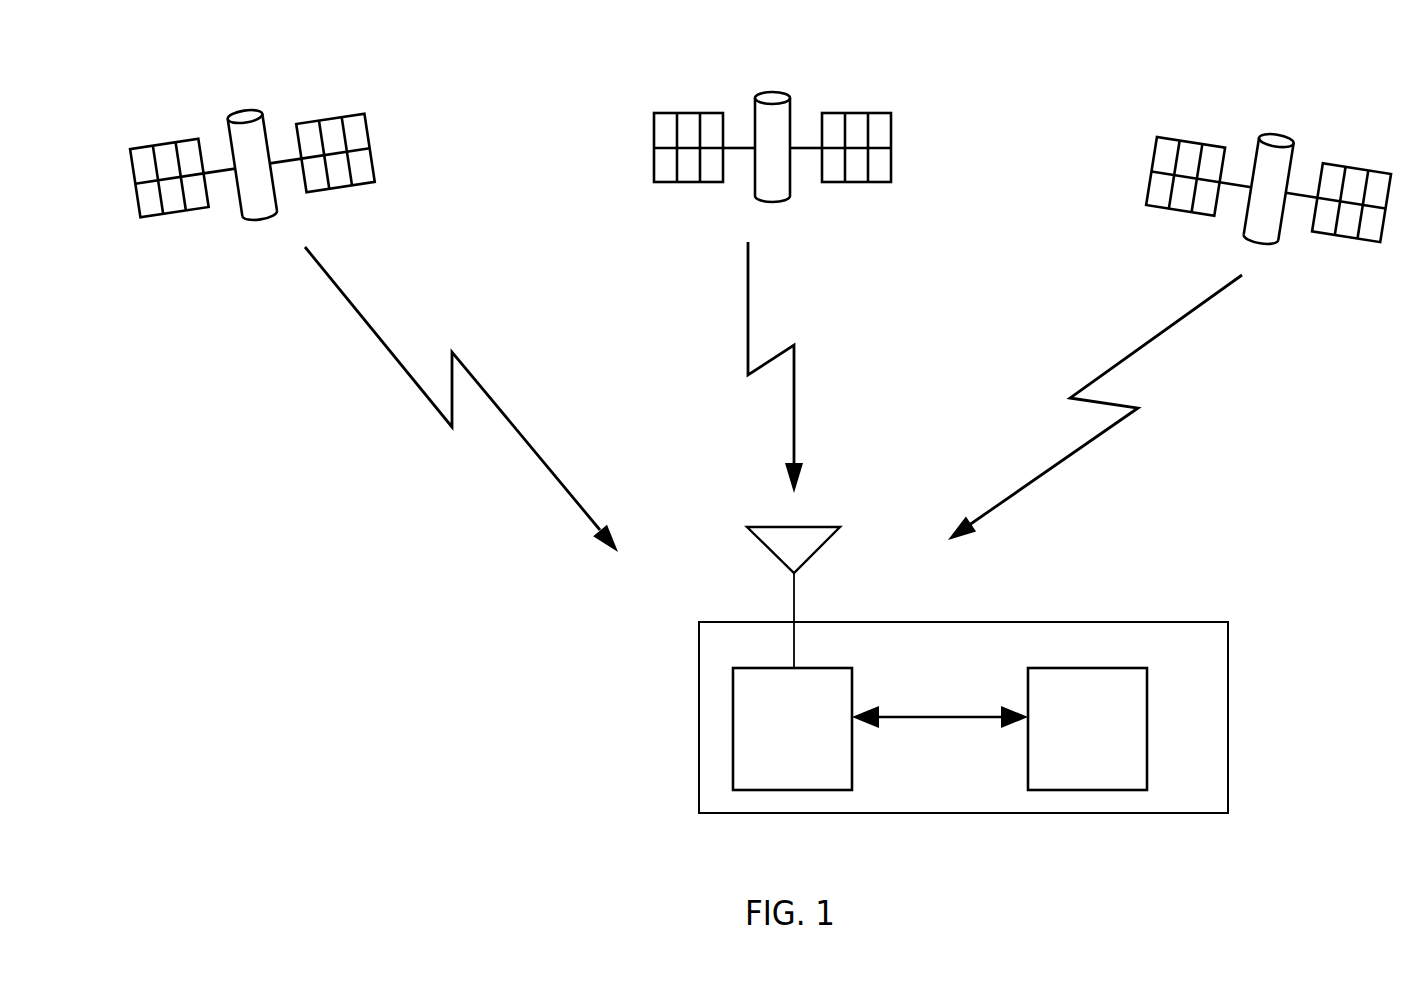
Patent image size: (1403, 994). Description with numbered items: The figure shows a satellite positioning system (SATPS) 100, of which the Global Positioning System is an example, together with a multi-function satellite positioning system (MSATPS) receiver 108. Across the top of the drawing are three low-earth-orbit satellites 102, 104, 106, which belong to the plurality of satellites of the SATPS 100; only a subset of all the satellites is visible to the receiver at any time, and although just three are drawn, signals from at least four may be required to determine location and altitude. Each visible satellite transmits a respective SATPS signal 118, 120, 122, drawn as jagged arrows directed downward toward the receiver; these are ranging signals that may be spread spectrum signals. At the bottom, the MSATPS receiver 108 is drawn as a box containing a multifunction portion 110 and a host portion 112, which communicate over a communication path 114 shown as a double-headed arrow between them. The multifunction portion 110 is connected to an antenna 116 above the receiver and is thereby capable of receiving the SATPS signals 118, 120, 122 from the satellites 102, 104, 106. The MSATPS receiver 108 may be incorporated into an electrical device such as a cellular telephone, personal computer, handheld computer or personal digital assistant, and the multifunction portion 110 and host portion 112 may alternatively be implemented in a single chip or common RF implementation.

The satellite positioning system 100 is at (238, 72).
The satellite 102 is at (370, 143).
The satellite 104 is at (892, 143).
The satellite 106 is at (1290, 143).
The multi-function satellite positioning system receiver 108 is at (1205, 663).
The multifunction portion 110 is at (817, 747).
The host portion 112 is at (1112, 747).
The communication path 114 is at (958, 717).
The antenna 116 is at (821, 525).
The SATPS signal 118 is at (490, 393).
The SATPS signal 120 is at (797, 377).
The SATPS signal 122 is at (1140, 405).